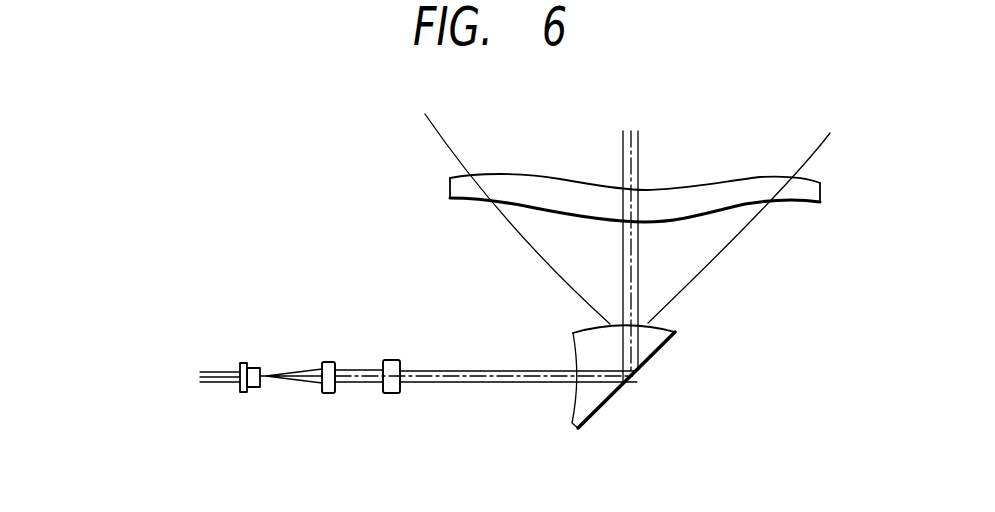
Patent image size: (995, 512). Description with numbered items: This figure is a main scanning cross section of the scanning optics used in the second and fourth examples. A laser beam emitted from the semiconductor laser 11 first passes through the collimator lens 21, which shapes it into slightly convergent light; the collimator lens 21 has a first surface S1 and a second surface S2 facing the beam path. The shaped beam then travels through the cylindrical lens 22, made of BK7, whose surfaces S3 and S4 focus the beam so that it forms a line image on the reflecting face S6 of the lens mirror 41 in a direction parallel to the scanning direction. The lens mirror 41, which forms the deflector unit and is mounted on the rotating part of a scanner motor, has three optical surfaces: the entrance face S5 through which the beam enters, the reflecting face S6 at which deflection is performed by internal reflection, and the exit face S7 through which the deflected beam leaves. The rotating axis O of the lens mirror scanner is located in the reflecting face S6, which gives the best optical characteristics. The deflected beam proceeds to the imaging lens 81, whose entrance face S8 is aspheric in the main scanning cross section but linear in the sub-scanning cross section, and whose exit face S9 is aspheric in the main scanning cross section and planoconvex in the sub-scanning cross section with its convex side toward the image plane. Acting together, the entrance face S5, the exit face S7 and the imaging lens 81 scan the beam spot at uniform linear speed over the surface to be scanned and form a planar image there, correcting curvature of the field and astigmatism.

The semiconductor laser 11 is at (244, 393).
The collimator lens 21 is at (312, 378).
The cylindrical lens 22 is at (408, 356).
The lens mirror 41 is at (629, 356).
The imaging lens 81 is at (635, 182).
The first lens surface S1 is at (319, 378).
The second lens surface S2 is at (337, 383).
The third lens surface S3 is at (383, 368).
The fourth lens surface S4 is at (402, 372).
The entrance face S5 is at (577, 383).
The reflecting face S6 is at (643, 372).
The exit face S7 is at (627, 308).
The entrance face of imaging lens S8 is at (640, 226).
The exit face of imaging lens S9 is at (634, 183).
The rotating axis O is at (636, 379).